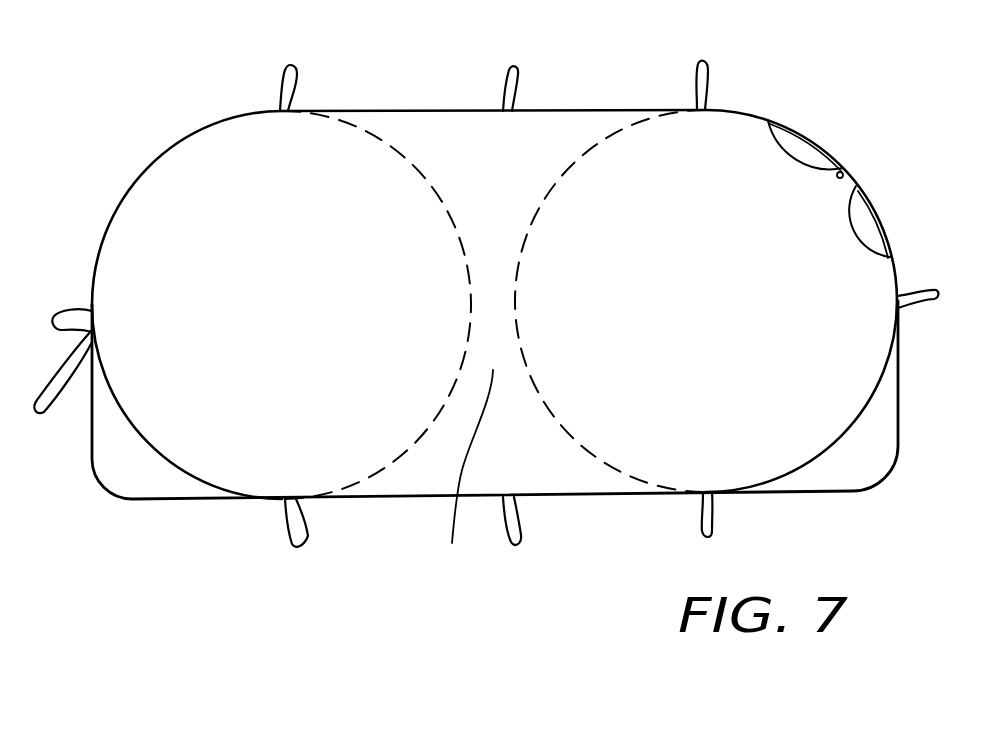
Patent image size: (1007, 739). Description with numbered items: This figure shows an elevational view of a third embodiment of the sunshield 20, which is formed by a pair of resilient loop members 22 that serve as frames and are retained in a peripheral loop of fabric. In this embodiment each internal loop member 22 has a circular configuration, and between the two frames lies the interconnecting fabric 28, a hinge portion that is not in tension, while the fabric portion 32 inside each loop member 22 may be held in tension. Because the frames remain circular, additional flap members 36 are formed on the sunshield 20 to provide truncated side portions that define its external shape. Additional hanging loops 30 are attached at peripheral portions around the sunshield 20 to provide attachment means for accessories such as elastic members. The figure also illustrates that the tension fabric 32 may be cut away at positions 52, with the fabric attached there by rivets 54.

The sunshield 20 is at (729, 376).
The loop member 22 is at (810, 138).
The interconnecting fabric 28 is at (387, 348).
The hanging loops 30 is at (298, 74).
The fabric portion 32 is at (722, 135).
The flap members 36 is at (143, 477).
The cut-away positions 52 is at (786, 140).
The rivets 54 is at (845, 170).